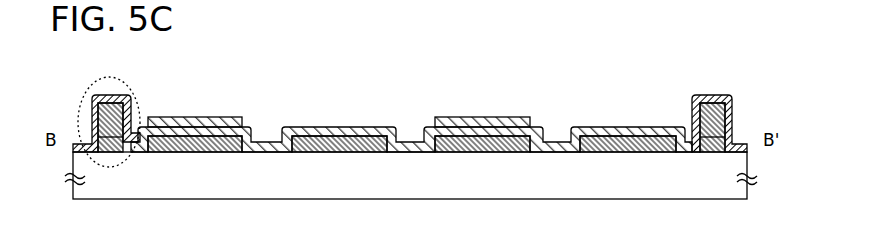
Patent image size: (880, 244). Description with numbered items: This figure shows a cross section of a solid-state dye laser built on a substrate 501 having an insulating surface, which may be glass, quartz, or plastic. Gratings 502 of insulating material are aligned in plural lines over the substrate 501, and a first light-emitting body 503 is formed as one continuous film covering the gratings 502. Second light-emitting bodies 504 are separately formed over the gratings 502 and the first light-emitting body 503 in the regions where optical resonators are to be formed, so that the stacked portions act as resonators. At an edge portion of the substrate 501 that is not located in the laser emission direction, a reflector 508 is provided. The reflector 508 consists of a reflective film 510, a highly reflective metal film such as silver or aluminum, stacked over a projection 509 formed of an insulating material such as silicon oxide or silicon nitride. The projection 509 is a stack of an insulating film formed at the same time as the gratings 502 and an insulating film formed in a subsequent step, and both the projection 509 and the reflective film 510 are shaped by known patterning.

The substrate 501 is at (206, 197).
The gratings 502 is at (467, 143).
The first light-emitting body 503 is at (330, 132).
The second light-emitting bodies 504 is at (205, 124).
The reflector 508 is at (137, 88).
The projection 509 is at (728, 108).
The reflective film 510 is at (715, 98).